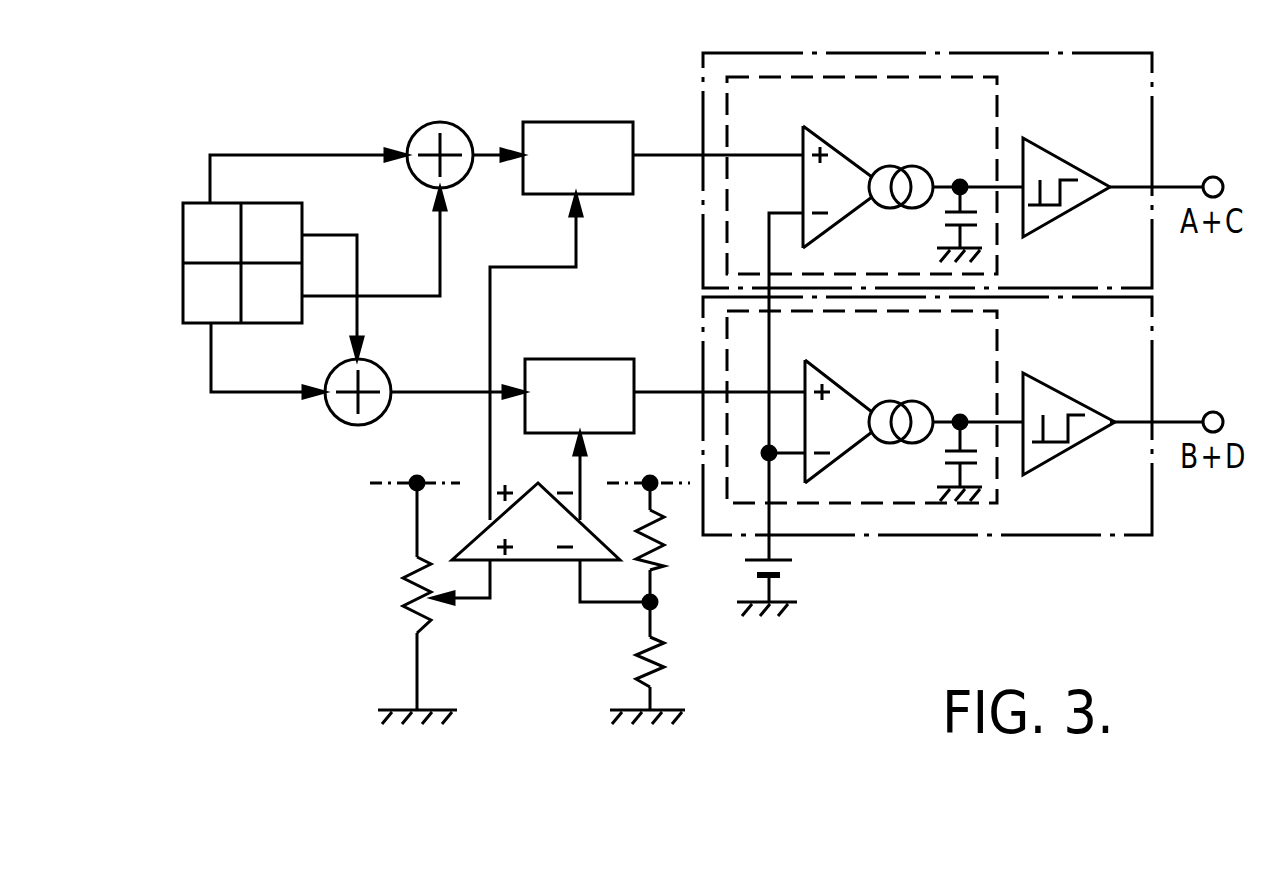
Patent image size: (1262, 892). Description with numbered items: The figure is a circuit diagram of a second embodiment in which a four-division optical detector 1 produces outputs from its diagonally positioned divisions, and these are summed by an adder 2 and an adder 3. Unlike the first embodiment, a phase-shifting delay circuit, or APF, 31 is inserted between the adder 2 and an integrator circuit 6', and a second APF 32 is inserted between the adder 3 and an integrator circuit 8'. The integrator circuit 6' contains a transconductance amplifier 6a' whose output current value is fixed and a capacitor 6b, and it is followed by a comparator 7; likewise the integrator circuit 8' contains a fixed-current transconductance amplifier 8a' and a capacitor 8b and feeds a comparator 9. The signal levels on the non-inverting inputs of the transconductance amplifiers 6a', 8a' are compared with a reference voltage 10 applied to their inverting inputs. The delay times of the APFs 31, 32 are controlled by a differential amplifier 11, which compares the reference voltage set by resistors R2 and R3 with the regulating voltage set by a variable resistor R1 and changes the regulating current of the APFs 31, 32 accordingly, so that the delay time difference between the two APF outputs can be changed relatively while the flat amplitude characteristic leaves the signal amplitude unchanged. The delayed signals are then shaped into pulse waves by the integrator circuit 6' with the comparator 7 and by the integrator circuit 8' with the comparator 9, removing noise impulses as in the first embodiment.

The 4-division optical detector 1 is at (183, 285).
The adder 2 is at (440, 122).
The adder 3 is at (333, 415).
The phase-shifting delay circuit (APF) 31 is at (597, 122).
The phase-shifting delay circuit (APF) 32 is at (582, 359).
The integrator circuit 6' is at (896, 167).
The transconductance amplifier 6a' is at (868, 167).
The capacitor 6b is at (942, 220).
The comparator 7 is at (1072, 158).
The integrator circuit 8' is at (900, 407).
The transconductance amplifier 8a' is at (869, 408).
The capacitor 8b is at (942, 458).
The comparator 9 is at (1075, 448).
The reference voltage 10 is at (785, 575).
The differential amplifier 11 is at (545, 560).
The variable resistor R1 is at (400, 595).
The resistor R2 is at (670, 544).
The resistor R3 is at (670, 665).